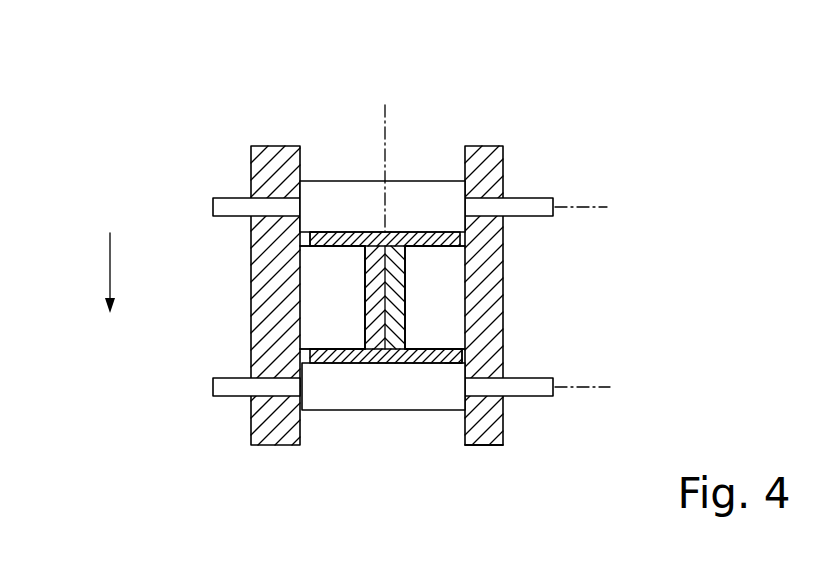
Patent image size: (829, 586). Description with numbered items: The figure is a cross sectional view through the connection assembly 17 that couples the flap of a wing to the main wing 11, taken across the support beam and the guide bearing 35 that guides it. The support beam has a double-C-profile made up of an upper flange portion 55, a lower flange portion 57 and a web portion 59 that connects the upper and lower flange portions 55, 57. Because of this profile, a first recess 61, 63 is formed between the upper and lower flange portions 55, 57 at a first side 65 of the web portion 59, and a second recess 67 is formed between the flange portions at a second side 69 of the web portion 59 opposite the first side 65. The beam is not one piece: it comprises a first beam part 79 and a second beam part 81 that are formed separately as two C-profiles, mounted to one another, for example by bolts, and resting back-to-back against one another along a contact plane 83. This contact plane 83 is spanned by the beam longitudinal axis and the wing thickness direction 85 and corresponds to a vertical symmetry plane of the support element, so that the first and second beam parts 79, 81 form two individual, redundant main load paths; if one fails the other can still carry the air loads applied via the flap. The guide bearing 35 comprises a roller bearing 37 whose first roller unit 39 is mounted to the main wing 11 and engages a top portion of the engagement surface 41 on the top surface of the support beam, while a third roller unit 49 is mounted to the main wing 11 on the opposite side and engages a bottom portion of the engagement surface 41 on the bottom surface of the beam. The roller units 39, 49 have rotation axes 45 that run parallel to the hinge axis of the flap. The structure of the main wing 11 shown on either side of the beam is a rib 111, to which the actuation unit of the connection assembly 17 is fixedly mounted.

The connection assembly 17 is at (443, 91).
The rib 111 is at (272, 158).
The first side 65 is at (228, 167).
The second side 69 is at (517, 166).
The rotation axis 45 is at (592, 207).
The first roller unit 39 is at (352, 197).
The third roller unit 49 is at (408, 392).
The contact plane 83 is at (387, 217).
The main wing 11 is at (620, 324).
The engagement surface 41 is at (428, 232).
The first beam part 79 is at (332, 246).
The second beam part 81 is at (463, 358).
The upper flange portion 55 is at (333, 248).
The lower flange portion 57 is at (327, 352).
The web portion 59 is at (405, 302).
The first recess 61 is at (353, 318).
The first recess 63 is at (274, 297).
The second recess 67 is at (511, 297).
The guide bearing 35 is at (503, 468).
The roller bearing 37 is at (508, 501).
The wing thickness direction 85 is at (110, 268).